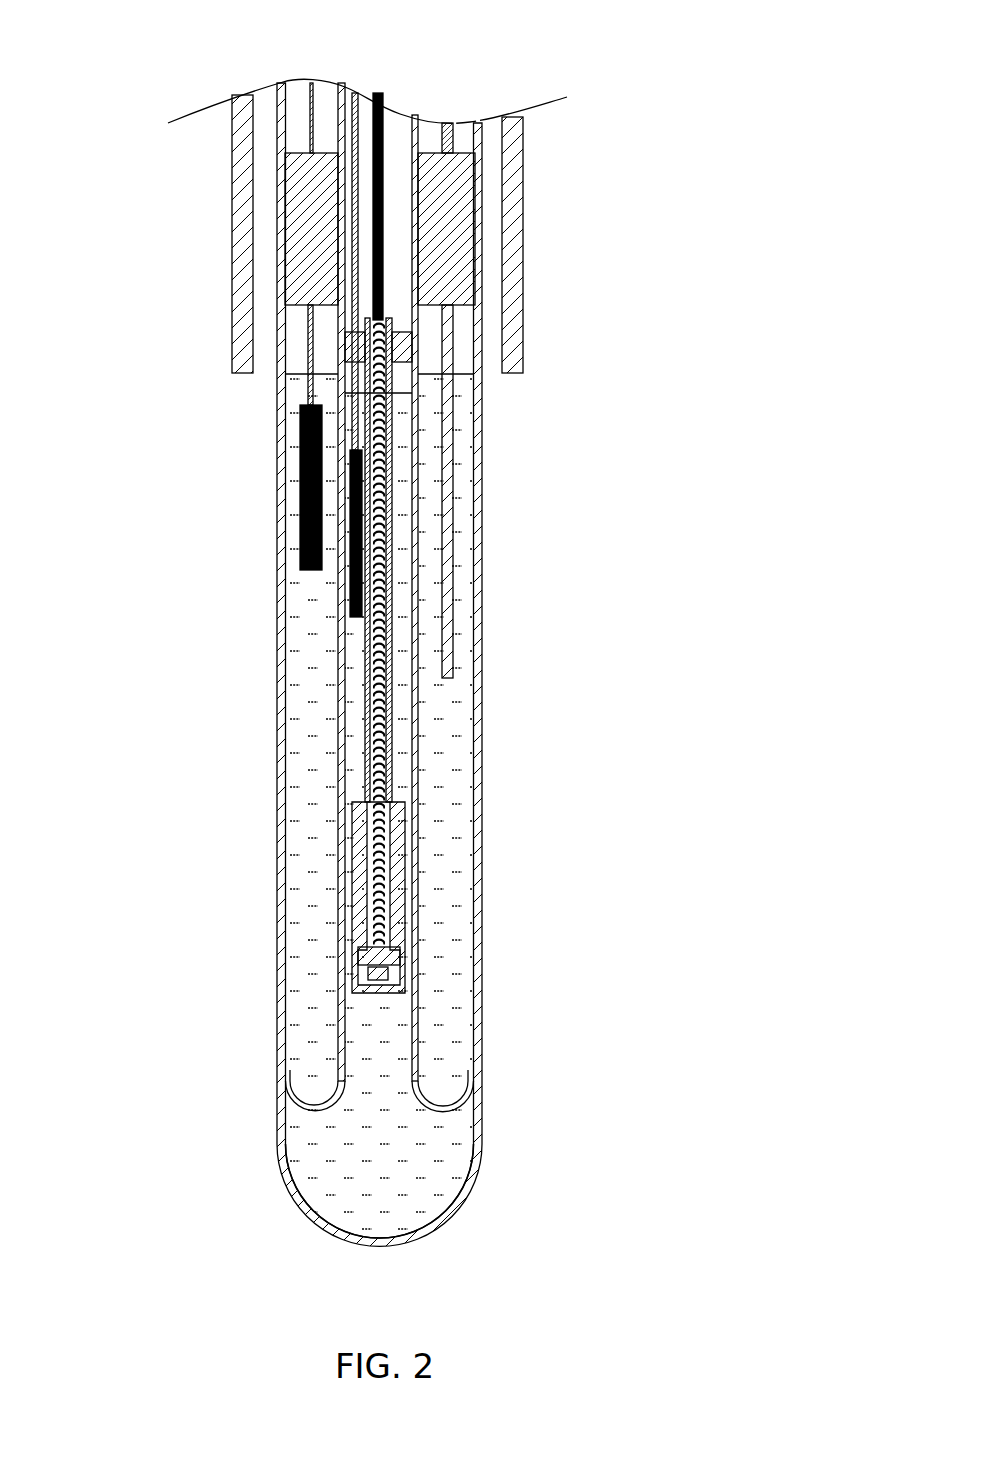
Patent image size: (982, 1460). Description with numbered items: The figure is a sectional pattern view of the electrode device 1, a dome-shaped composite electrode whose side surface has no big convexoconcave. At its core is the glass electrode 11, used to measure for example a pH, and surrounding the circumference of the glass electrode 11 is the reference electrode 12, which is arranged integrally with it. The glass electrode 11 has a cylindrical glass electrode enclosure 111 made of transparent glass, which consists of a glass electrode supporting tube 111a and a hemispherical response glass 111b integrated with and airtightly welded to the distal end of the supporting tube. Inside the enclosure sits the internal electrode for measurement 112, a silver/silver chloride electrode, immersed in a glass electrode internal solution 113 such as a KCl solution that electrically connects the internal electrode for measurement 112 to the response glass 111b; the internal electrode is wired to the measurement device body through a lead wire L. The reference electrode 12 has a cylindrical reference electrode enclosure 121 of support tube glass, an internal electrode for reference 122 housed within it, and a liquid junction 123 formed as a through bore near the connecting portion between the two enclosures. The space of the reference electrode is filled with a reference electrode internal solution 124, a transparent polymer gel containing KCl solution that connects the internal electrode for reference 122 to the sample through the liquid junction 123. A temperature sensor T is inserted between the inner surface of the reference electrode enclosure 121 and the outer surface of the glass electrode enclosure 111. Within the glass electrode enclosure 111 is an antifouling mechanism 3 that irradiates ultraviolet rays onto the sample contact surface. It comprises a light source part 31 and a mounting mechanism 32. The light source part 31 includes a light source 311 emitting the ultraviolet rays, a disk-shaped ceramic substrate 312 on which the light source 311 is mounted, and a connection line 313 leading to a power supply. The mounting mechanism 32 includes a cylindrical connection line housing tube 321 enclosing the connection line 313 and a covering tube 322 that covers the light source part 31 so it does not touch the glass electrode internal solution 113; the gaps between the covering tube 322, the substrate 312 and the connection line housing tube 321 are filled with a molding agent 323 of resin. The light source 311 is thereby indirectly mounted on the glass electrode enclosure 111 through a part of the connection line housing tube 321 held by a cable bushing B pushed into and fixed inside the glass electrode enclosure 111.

The electrode device 1 is at (722, 160).
The glass electrode 11 is at (387, 674).
The glass electrode enclosure 111 is at (501, 674).
The glass electrode supporting tube 111a is at (437, 1107).
The response glass 111b is at (417, 1242).
The internal electrode for measurement 112 is at (350, 608).
The glass electrode internal solution 113 is at (330, 1174).
The reference electrode 12 is at (349, 664).
The reference electrode enclosure 121 is at (282, 730).
The internal electrode for reference 122 is at (300, 525).
The liquid junction 123 is at (282, 1042).
The reference electrode internal solution 124 is at (312, 898).
The antifouling mechanism 3 is at (576, 556).
The light source part 31 is at (529, 556).
The light source 311 is at (403, 972).
The substrate 312 is at (403, 955).
The connection line 313 is at (383, 210).
The mounting mechanism 32 is at (515, 655).
The connection line housing tube 321 is at (388, 748).
The covering tube 322 is at (410, 850).
The molding agent 323 is at (410, 813).
The cable bushing B is at (283, 235).
The lead wire L is at (328, 108).
The temperature sensor T is at (455, 522).